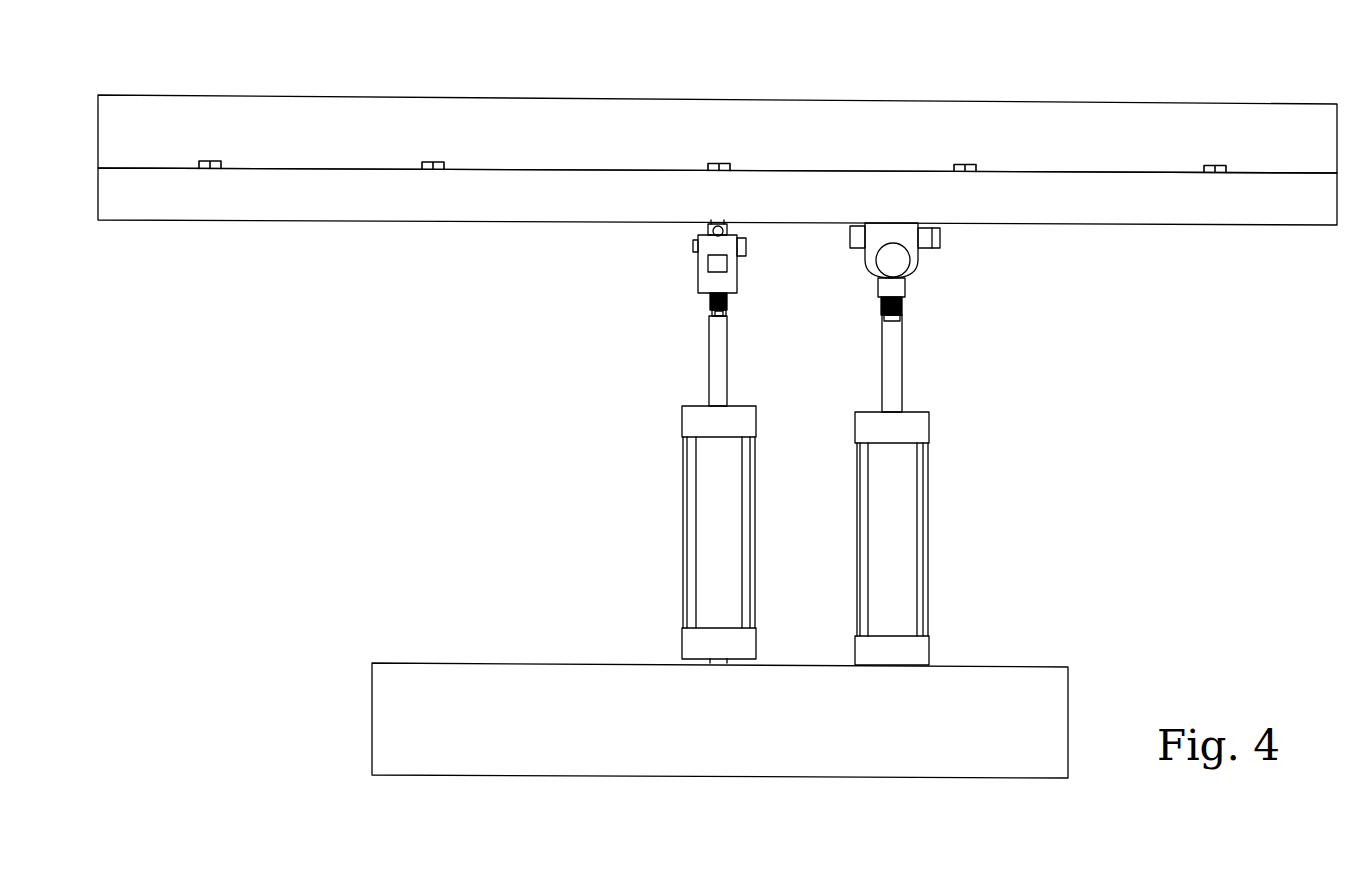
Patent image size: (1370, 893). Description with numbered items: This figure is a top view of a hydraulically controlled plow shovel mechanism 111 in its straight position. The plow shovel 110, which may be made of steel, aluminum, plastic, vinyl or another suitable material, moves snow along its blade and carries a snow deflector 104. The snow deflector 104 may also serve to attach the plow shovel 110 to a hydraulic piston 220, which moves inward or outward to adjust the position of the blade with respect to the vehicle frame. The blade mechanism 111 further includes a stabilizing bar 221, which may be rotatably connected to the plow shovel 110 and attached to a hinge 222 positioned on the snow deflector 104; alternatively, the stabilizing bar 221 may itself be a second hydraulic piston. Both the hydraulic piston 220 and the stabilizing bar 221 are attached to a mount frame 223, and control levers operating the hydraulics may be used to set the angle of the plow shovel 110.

The plow shovel 110 is at (565, 113).
The snow deflector 104 is at (1168, 205).
The plow shovel mechanism 111 is at (1169, 517).
The hydraulic piston 220 is at (711, 473).
The stabilizing bar 221 is at (897, 484).
The hinge 222 is at (908, 268).
The mount frame 223 is at (720, 720).